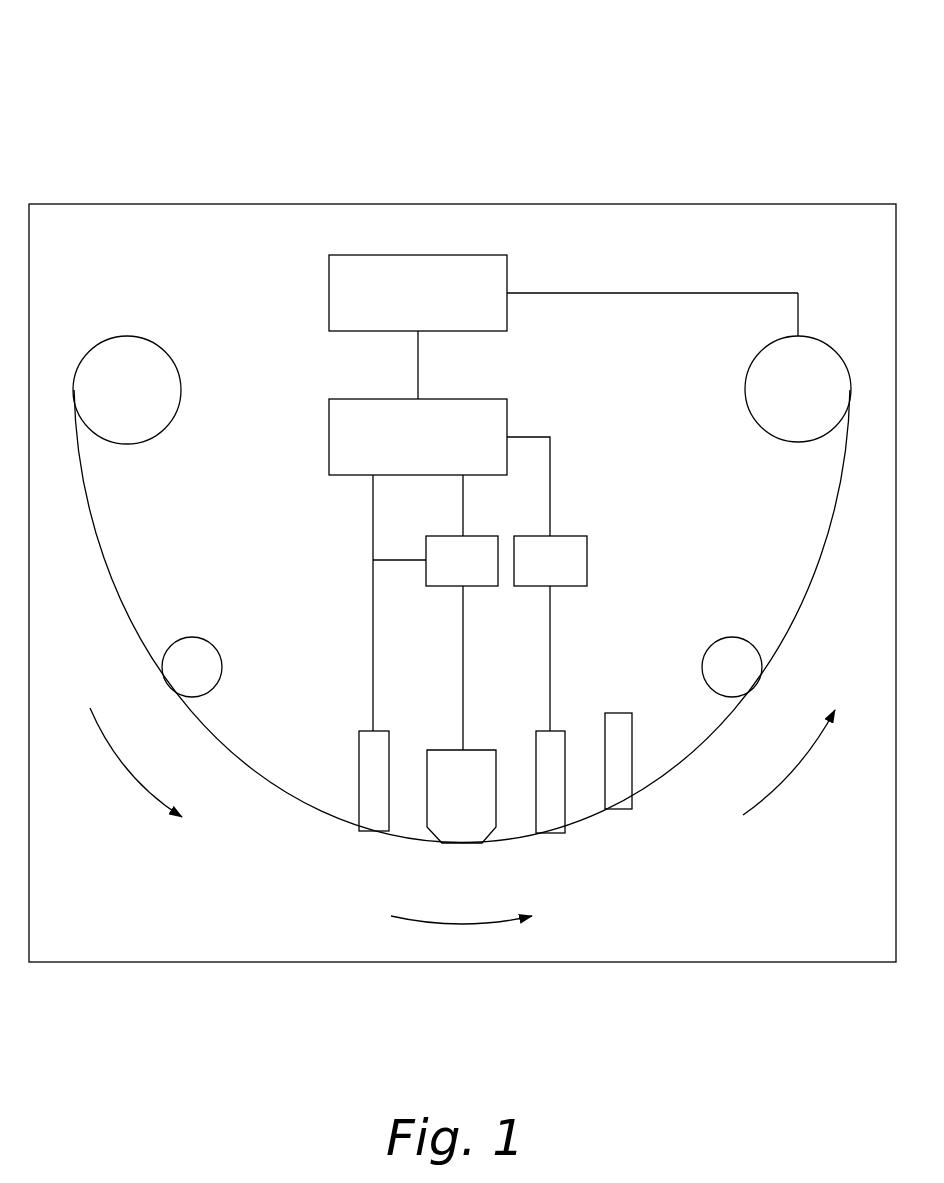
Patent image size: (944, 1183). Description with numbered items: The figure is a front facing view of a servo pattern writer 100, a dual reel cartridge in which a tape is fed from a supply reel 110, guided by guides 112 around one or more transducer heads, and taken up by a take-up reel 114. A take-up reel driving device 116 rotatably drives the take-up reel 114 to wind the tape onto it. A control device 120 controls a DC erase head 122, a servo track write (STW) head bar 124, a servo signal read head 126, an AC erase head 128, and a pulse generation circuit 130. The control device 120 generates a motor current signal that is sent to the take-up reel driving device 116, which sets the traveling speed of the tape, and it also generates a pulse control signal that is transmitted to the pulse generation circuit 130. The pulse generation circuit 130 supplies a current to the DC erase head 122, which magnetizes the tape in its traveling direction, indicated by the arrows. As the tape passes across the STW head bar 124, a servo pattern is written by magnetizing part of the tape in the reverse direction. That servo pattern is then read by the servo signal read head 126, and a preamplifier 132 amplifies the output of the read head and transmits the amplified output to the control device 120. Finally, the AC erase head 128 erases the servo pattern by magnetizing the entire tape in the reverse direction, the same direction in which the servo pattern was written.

The servo pattern writer 100 is at (122, 40).
The supply reel 110 is at (107, 403).
The guides 112 is at (172, 679).
The take-up reel 114 is at (778, 402).
The take-up reel driving device 116 is at (398, 306).
The control device 120 is at (398, 449).
The DC erase head 122 is at (373, 826).
The servo track write (STW) head bar 124 is at (442, 798).
The servo signal read head 126 is at (550, 826).
The AC erase head 128 is at (617, 798).
The pulse generation circuit 130 is at (442, 573).
The preamplifier 132 is at (530, 573).